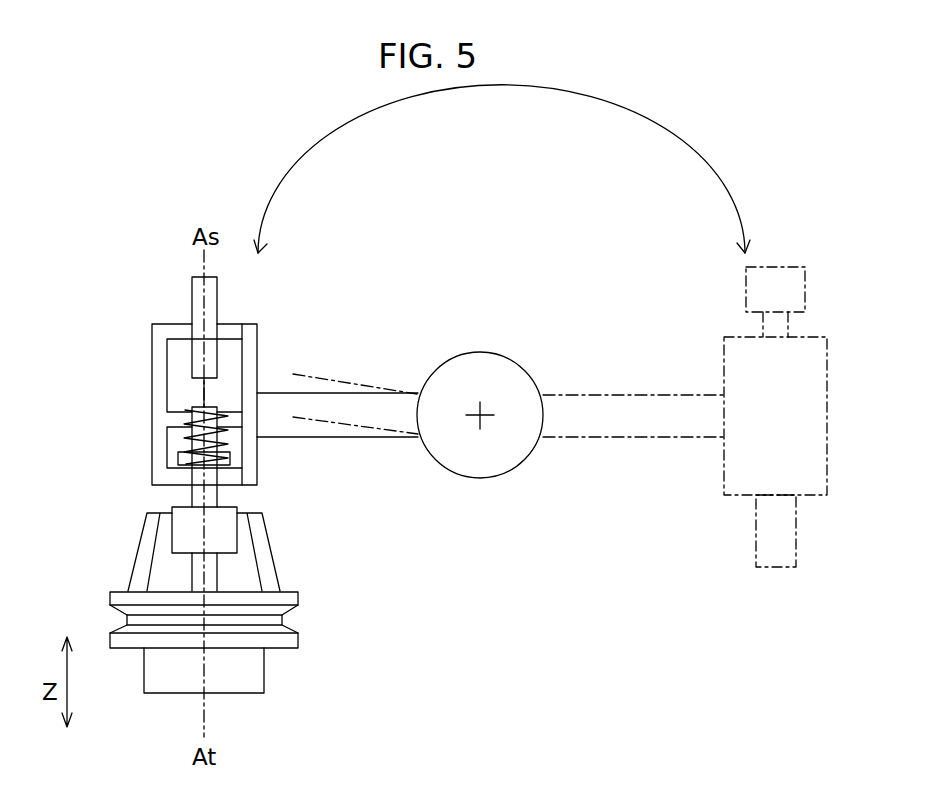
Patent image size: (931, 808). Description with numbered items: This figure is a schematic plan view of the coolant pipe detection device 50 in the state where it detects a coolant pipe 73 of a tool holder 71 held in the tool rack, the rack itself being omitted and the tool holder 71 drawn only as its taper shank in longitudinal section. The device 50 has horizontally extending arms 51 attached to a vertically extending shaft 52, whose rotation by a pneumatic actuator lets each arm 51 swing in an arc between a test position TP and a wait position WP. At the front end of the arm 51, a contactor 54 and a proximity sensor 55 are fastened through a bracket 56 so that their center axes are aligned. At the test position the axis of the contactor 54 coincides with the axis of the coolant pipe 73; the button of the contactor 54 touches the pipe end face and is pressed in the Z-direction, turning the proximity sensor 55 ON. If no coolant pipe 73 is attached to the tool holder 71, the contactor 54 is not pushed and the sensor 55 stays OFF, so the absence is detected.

The coolant pipe detection device 50 is at (477, 297).
The arm 51 is at (317, 405).
The shaft 52 is at (498, 368).
The contactor 54 is at (188, 520).
The proximity sensor 55 is at (197, 293).
The bracket 56 is at (158, 383).
The tool holder 71 is at (264, 668).
The coolant pipe 73 is at (197, 570).